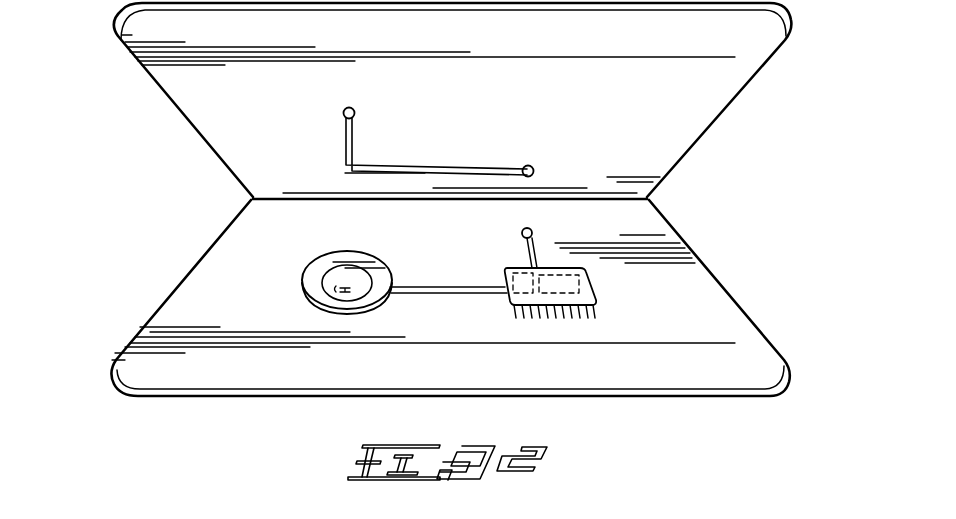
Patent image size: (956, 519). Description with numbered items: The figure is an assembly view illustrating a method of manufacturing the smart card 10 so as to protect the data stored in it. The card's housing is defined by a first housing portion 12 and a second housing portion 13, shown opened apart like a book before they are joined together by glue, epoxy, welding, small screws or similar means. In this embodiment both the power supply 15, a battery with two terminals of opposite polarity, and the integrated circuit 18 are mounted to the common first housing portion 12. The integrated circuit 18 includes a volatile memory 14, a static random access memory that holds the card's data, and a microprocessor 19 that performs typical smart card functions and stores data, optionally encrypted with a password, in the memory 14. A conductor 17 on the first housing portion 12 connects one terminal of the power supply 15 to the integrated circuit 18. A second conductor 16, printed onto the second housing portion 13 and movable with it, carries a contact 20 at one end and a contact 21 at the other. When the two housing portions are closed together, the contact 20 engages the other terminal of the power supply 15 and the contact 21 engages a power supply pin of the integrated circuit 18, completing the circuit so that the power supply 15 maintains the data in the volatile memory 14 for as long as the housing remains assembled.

The smart card 10 is at (90, 125).
The first housing portion 12 is at (743, 318).
The second housing portion 13 is at (710, 133).
The volatile memory 14 is at (503, 304).
The power supply 15 is at (310, 280).
The conductor 16 is at (402, 163).
The conductor 17 is at (425, 285).
The integrated circuit 18 is at (565, 322).
The microprocessor 19 is at (594, 287).
The contact 20 is at (343, 112).
The contact 21 is at (533, 167).